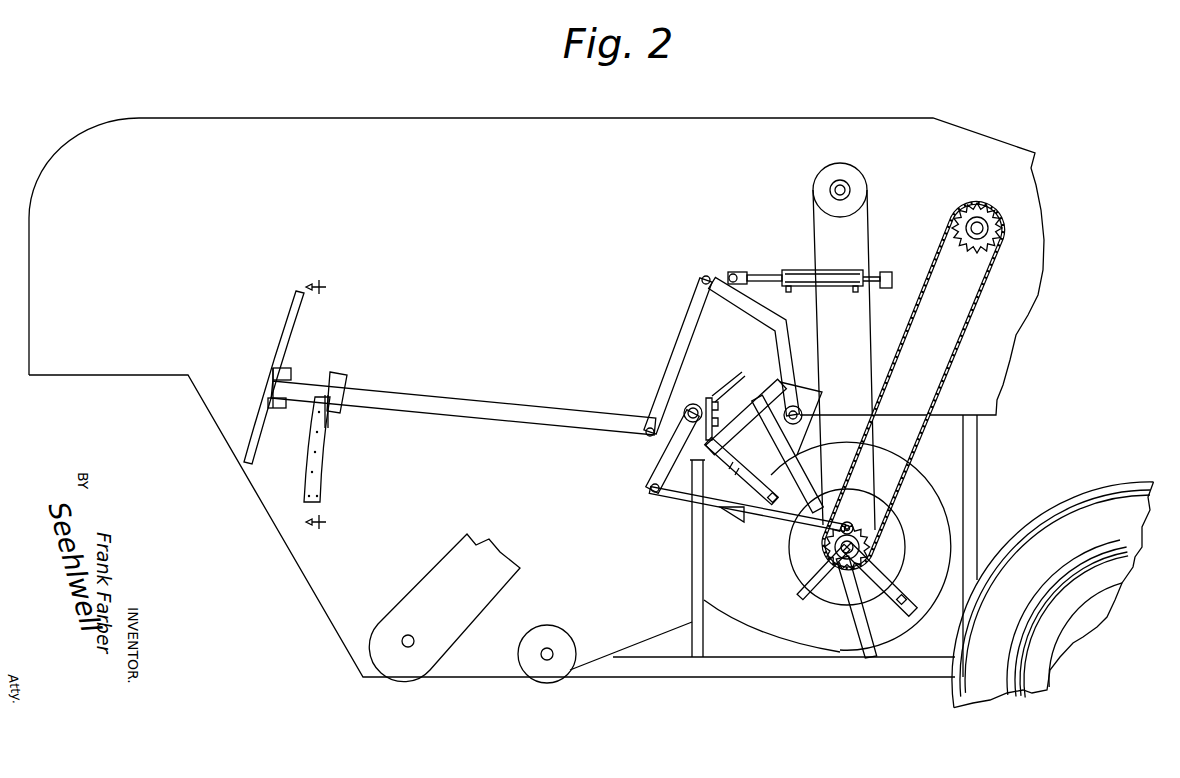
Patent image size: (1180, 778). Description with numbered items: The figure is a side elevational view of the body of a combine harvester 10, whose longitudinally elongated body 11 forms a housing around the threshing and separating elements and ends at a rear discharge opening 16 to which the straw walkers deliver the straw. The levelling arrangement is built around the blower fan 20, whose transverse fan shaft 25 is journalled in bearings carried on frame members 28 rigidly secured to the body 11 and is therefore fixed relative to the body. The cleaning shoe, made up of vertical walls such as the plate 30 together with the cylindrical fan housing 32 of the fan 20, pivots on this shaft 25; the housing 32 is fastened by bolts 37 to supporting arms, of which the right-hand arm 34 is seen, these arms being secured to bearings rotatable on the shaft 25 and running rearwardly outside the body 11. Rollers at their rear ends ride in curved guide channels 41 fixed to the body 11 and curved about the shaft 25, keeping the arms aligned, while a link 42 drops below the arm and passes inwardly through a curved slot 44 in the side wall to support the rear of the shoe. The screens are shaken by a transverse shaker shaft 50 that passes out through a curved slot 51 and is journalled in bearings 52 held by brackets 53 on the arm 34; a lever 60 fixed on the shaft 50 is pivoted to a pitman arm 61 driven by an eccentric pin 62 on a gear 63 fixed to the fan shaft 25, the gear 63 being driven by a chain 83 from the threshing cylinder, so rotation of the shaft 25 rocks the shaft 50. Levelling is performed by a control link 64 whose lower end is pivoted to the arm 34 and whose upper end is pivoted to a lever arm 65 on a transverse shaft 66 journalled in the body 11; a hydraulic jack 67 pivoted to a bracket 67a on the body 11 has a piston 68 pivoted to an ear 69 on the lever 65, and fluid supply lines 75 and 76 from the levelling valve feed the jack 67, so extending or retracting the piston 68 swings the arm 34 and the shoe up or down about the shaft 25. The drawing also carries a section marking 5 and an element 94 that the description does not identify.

The section line 5- 5 is at (330, 407).
The combine harvester 10 is at (305, 584).
The body 11 is at (541, 179).
The discharge opening 16 is at (106, 380).
The blower fan 20 is at (820, 582).
The fan shaft 25 is at (845, 556).
The frame members 28 is at (868, 648).
The vertical plate or wall 30 is at (713, 562).
The fan housing 32 is at (922, 492).
The supporting arm 34 is at (742, 480).
The bolts 37 is at (770, 505).
The curved guide channels 41 is at (284, 320).
The link 42 is at (332, 423).
The curved slots 44 is at (318, 440).
The shaker shaft 50 is at (684, 411).
The curved slots 51 is at (715, 395).
The bearings 52 is at (688, 408).
The brackets 53 is at (735, 398).
The lever 60 is at (665, 462).
The pitman arm 61 is at (695, 500).
The eccentric pin 62 is at (835, 546).
The gear 63 is at (866, 546).
The control link 64 is at (690, 325).
The lever arm 65 is at (780, 338).
The transverse shaft 66 is at (803, 413).
The hydraulic jack 67 is at (825, 270).
The bracket 67a is at (890, 271).
The piston 68 is at (760, 273).
The ear 69 is at (727, 270).
The fluid supply line 75 is at (790, 293).
The fluid supply line 76 is at (856, 293).
The chain 83 is at (950, 352).
The arm 94 is at (456, 407).